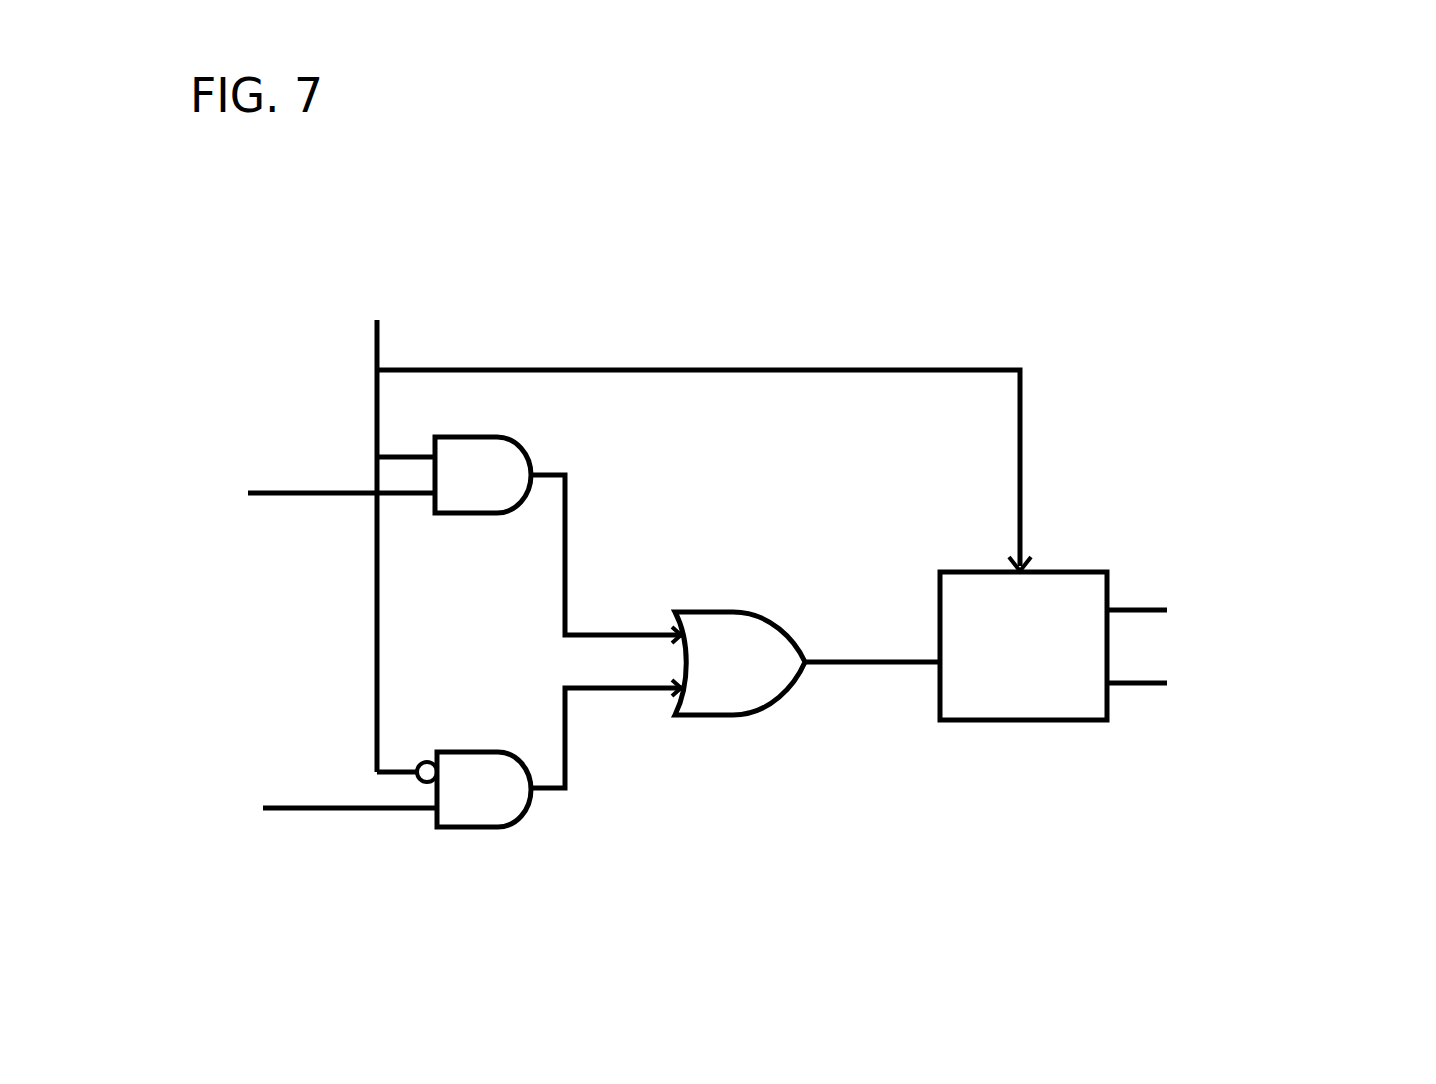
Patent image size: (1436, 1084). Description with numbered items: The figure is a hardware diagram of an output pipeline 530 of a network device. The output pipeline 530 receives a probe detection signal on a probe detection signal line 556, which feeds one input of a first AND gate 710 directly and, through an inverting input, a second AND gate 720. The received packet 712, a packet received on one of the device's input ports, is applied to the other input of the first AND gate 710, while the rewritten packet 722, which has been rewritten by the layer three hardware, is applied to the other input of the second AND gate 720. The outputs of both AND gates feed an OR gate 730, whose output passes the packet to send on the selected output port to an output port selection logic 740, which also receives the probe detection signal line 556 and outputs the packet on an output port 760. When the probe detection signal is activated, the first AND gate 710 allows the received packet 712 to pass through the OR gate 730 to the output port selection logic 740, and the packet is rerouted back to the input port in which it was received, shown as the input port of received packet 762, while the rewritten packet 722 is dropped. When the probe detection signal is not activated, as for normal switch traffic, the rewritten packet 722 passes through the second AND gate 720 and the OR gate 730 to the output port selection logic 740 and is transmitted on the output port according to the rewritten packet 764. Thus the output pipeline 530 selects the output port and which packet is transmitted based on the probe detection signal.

The output pipeline 530 is at (639, 276).
The probe detection signal line 556 is at (379, 352).
The AND gate 710 is at (514, 441).
The packet 712 is at (320, 444).
The AND gate 720 is at (505, 826).
The rewritten packet 722 is at (316, 767).
The OR gate 730 is at (702, 617).
The output port selection logic 740 is at (940, 570).
The output port 760 is at (1205, 585).
The input port of received packet output 762 is at (1216, 583).
The output port according to rewritten packet 764 is at (1216, 720).